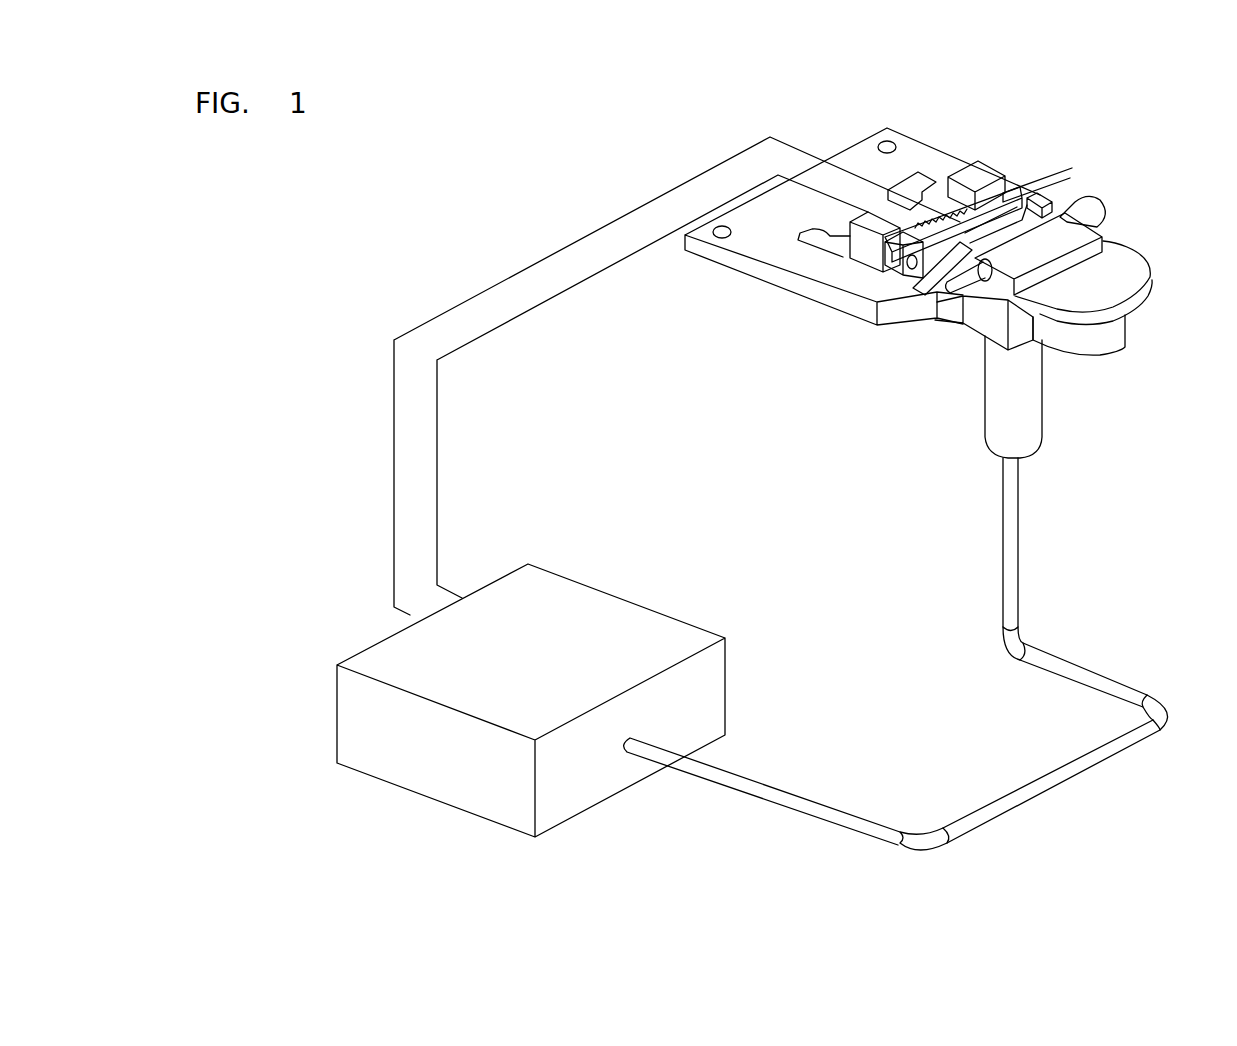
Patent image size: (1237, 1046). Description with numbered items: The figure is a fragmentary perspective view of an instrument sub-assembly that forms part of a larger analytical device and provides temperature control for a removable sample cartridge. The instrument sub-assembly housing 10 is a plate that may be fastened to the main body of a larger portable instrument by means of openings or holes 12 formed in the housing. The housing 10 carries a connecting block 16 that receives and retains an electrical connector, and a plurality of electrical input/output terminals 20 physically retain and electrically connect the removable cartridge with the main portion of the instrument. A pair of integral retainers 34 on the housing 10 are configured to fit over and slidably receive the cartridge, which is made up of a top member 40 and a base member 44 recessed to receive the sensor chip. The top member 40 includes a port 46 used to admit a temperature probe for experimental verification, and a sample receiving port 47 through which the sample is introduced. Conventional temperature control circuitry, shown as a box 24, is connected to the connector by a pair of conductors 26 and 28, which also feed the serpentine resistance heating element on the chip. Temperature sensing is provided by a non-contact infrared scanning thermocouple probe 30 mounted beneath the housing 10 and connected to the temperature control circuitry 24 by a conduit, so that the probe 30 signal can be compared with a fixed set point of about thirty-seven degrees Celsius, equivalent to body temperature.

The instrument sub-assembly housing 10 is at (779, 303).
The holes 12 is at (715, 225).
The connecting block 16 is at (982, 165).
The electrical input/output terminals 20 is at (935, 205).
The temperature control circuitry 24 is at (573, 598).
The conductor 26 is at (392, 452).
The conductor 28 is at (437, 522).
The infrared scanning thermocouple probe 30 is at (988, 412).
The integral retainers 34 is at (1043, 200).
The top member 40 is at (1085, 258).
The base member 44 is at (1127, 283).
The port 46 is at (965, 297).
The sample receiving port 47 is at (1097, 207).